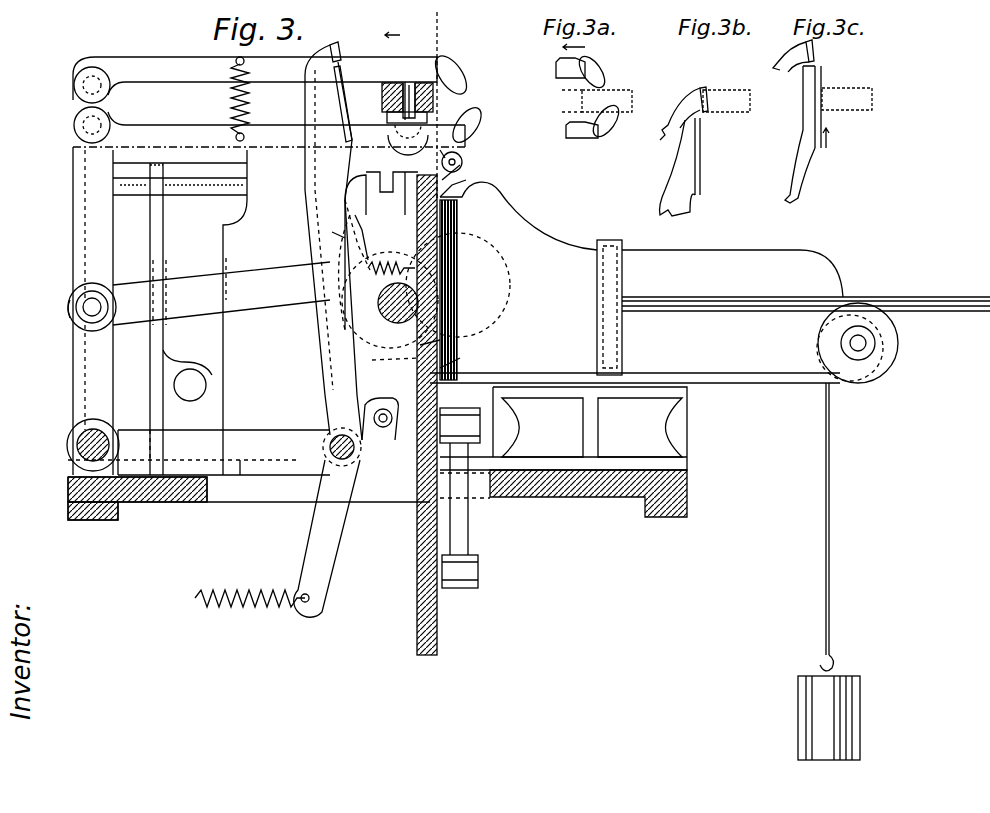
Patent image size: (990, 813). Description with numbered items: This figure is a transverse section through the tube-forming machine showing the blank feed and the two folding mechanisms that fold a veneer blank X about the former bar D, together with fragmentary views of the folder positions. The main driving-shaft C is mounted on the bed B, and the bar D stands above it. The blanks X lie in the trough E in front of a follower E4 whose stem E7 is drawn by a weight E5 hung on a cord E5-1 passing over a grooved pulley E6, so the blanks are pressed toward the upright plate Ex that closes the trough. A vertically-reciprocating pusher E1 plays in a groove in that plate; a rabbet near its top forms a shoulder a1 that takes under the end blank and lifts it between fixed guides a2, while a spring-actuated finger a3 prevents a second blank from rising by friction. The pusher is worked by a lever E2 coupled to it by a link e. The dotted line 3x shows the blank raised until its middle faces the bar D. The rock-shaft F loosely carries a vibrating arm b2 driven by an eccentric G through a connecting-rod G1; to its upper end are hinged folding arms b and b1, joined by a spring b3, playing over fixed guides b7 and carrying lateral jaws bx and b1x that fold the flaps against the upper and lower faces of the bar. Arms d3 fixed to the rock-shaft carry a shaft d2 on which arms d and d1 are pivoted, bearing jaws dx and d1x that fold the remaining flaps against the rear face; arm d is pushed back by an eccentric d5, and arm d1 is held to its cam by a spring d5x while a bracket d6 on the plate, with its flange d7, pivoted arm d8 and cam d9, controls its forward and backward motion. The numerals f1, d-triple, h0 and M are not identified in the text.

In FIG. 3, the upper folding arm b is at (255, 80).
In FIG. 3, the lower folding arm b1 is at (269, 127).
In FIG. 3, the vibrating arm b2 is at (93, 311).
In FIG. 3, the spring b3 is at (250, 103).
In FIG. 3, the upper folding jaw bx is at (462, 65).
In FIG. 3A, the upper folding jaw bx is at (600, 65).
In FIG. 3, the lower folding jaw b1x is at (477, 130).
In FIG. 3A, the lower folding jaw b1x is at (613, 128).
In FIG. 3, the fixed guides b7 is at (380, 115).
In FIG. 3, the feed finger f1 is at (409, 88).
In FIG. 3, the former bar D is at (433, 100).
In FIG. 3A, the former bar D is at (615, 102).
In FIG. 3B, the former bar D is at (730, 102).
In FIG. 3C, the former bar D is at (847, 118).
In FIG. 3, the raised blank position 3x is at (421, 106).
In FIG. 3, the upper folding arm d is at (322, 50).
In FIG. 3, the upper folding jaw dx is at (340, 45).
In FIG. 3B, the upper folding jaw dx is at (703, 85).
In FIG. 3C, the upper folding jaw dx is at (812, 50).
In FIG. 3, the lower folding jaw d1x is at (348, 100).
In FIG. 3B, the lower folding jaw d1x is at (700, 180).
In FIG. 3C, the lower folding jaw d1x is at (821, 80).
In FIG. 3, the lower folding arm d1 is at (323, 162).
In FIG. 3, the shaft d2 is at (352, 221).
In FIG. 3, the arm d3 is at (375, 447).
In FIG. 3, the bracket d6 is at (392, 430).
In FIG. 3, the cam-like marginal flange d7 is at (358, 225).
In FIG. 3, the pivoted arm d8 is at (395, 370).
In FIG. 3, the cam d9 is at (330, 238).
In FIG. 3, the spring d-triple is at (387, 258).
In FIG. 3, the eccentric d5 is at (440, 340).
In FIG. 3, the spring d5x is at (240, 592).
In FIG. 3, the shoulder a1 is at (455, 178).
In FIG. 3, the fixed guides a2 is at (455, 150).
In FIG. 3, the spring-actuated finger a3 is at (455, 190).
In FIG. 3, the eccentric G is at (388, 260).
In FIG. 3, the connecting-rod G1 is at (199, 296).
In FIG. 3, the main driving-shaft C is at (398, 303).
In FIG. 3, the blank trough E is at (641, 243).
In FIG. 3, the pusher E1 is at (458, 243).
In FIG. 3, the lever E2 is at (462, 590).
In FIG. 3, the follower E4 is at (600, 272).
In FIG. 3, the weight E5 is at (815, 700).
In FIG. 3, the cord E5-1 is at (830, 525).
In FIG. 3, the grooved pulley E6 is at (880, 350).
In FIG. 3, the follower stem E7 is at (806, 292).
In FIG. 3, the upright plate Ex is at (417, 520).
In FIG. 3, the link e is at (459, 499).
In FIG. 3, the frame h0 is at (180, 312).
In FIG. 3, the pivot M is at (187, 375).
In FIG. 3, the rock-shaft F is at (76, 447).
In FIG. 3, the main frame or bed B is at (688, 483).
In FIG. 3, the veneer blank X is at (460, 361).